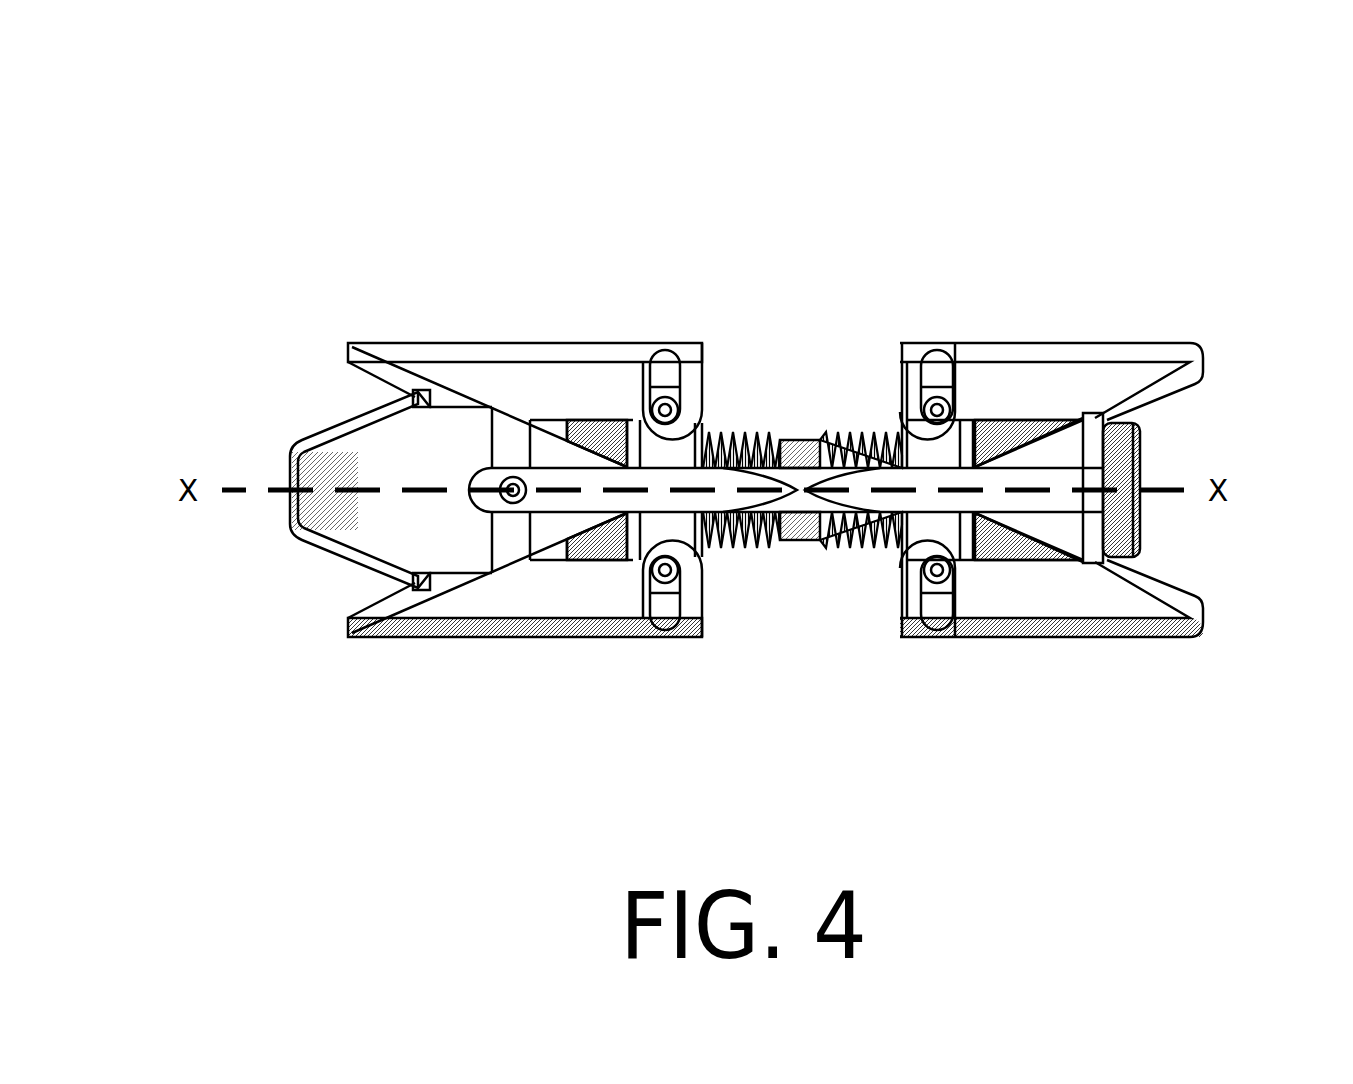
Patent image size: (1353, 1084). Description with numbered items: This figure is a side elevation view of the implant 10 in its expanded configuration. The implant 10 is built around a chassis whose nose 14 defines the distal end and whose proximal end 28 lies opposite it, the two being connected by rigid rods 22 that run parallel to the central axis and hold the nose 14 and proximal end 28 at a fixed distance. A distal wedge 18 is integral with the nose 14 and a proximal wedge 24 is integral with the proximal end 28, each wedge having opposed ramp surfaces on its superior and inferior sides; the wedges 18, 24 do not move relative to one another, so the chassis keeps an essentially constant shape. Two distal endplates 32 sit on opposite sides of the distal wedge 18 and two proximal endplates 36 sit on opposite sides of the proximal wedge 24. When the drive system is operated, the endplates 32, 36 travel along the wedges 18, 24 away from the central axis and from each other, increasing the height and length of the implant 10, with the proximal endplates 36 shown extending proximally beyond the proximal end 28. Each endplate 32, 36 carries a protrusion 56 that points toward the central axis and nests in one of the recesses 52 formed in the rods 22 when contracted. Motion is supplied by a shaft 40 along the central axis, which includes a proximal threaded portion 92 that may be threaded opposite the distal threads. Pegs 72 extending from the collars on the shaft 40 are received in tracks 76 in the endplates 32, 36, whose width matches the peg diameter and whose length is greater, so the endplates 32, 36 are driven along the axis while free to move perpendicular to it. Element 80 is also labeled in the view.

The implant 10 is at (1163, 140).
The nose 14 is at (292, 456).
The distal wedge 18 is at (528, 548).
The rods 22 is at (645, 507).
The proximal wedge 24 is at (1050, 545).
The proximal end 28 is at (1105, 560).
The distal endplates 32 is at (535, 338).
The proximal endplates 36 is at (988, 340).
The shaft 40 is at (797, 527).
The recesses 52 is at (837, 490).
The protrusion 56 is at (652, 428).
The pegs 72 is at (678, 410).
The tracks 76 is at (678, 350).
The slot shoulder 80 is at (673, 582).
The proximal threaded portion 92 is at (850, 545).